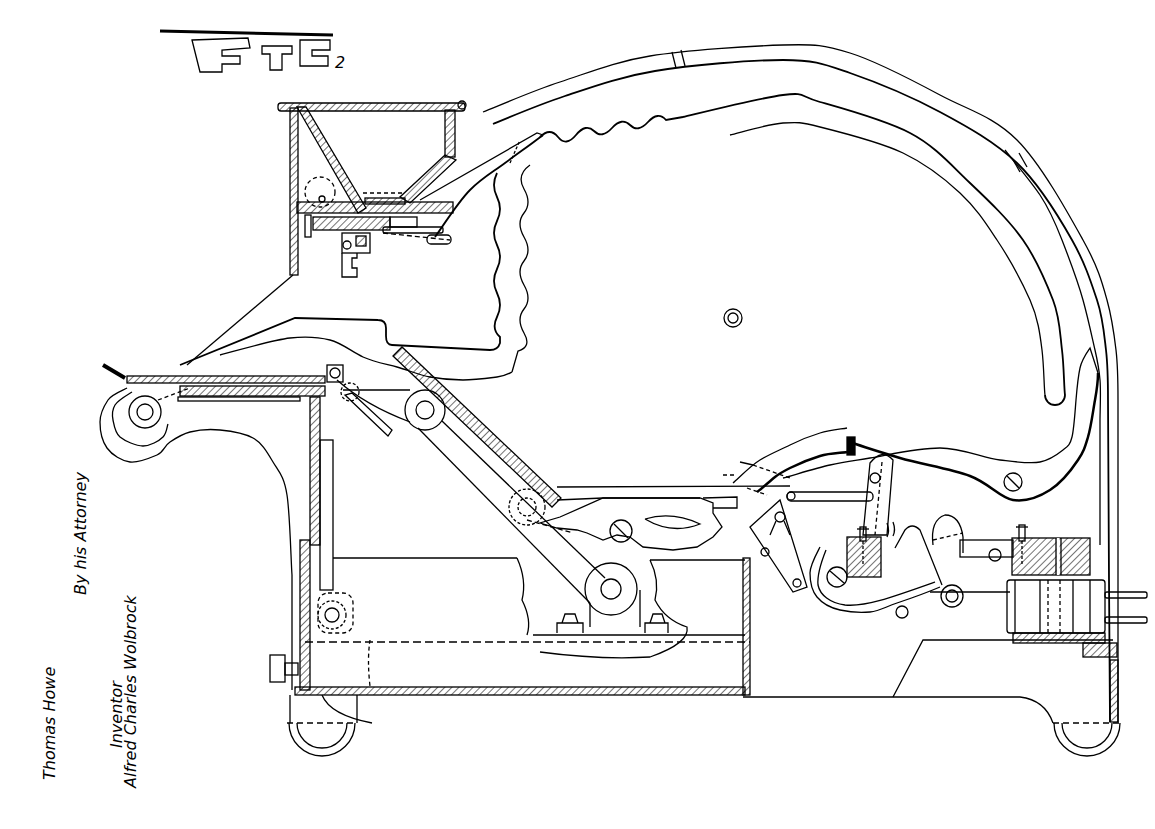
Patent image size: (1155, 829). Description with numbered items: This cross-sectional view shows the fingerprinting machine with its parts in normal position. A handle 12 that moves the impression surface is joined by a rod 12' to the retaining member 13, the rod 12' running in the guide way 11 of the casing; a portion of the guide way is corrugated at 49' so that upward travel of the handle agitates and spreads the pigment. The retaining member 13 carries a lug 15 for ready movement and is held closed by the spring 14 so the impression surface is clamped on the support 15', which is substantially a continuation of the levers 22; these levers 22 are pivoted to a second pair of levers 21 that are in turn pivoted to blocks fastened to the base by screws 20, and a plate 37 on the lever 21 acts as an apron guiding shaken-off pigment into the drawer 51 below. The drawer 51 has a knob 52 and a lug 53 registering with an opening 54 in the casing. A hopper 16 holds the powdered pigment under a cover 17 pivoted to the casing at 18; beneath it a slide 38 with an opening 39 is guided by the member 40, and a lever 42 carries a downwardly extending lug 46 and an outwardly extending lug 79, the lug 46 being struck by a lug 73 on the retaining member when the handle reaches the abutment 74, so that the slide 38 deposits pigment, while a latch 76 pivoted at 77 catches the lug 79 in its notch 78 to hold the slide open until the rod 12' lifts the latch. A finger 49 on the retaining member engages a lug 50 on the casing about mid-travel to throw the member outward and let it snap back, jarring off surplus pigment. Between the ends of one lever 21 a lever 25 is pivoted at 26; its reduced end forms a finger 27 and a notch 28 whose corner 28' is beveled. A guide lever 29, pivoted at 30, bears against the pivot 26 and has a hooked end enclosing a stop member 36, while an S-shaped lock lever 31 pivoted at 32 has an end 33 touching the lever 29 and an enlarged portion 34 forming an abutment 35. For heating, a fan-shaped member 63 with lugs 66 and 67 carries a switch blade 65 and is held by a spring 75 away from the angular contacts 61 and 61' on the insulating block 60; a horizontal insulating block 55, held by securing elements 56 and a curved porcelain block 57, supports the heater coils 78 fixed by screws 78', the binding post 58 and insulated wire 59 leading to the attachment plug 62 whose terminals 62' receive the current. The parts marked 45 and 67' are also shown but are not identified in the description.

The guide way 11 is at (833, 120).
The handle 12 is at (196, 539).
The rod 12' is at (177, 412).
The retaining member 13 is at (247, 372).
The spring 14 is at (318, 368).
The lug 15 is at (192, 359).
The support 15' is at (87, 376).
The hopper 16 is at (340, 157).
The cover 17 is at (288, 104).
The pivot 18 is at (462, 100).
The screws 20 is at (562, 616).
The levers 21 is at (470, 478).
The levers 22 is at (404, 428).
The lever 25 is at (605, 485).
The pivot 26 is at (518, 510).
The finger 27 is at (815, 492).
The notch 28 is at (807, 508).
The corner 28' is at (807, 524).
The guide lever 29 is at (700, 545).
The pivot 30 is at (622, 519).
The lock lever 31 is at (880, 428).
The pivot 32 is at (1008, 472).
The end of lock lever 33 is at (725, 518).
The enlarged portion 34 is at (790, 450).
The abutment 35 is at (868, 415).
The stop member 36 is at (680, 522).
The plate 37 is at (505, 440).
The slide 38 is at (430, 238).
The opening 39 is at (383, 207).
The guide member 40 is at (322, 232).
The lever 42 is at (300, 225).
The plate 45 is at (298, 243).
The lug 46 is at (345, 280).
The finger 49 is at (366, 419).
The corrugated portion 49' is at (611, 119).
The lug 50 is at (727, 308).
The drawer 51 is at (752, 665).
The knob 52 is at (268, 662).
The lug 53 is at (318, 663).
The opening 54 is at (365, 728).
The insulating block 55 is at (1090, 553).
The securing elements 56 is at (1075, 530).
The curved porcelain block 57 is at (1020, 600).
The binding post 58 is at (851, 562).
The insulated wire 59 is at (940, 592).
The insulating block 60 is at (975, 627).
The electric contact 61 is at (973, 526).
The electric contact 61' is at (918, 546).
The attachment plug 62 is at (1124, 640).
The terminals 62' is at (1129, 579).
The fan-shaped member 63 is at (756, 465).
The electric switch blade 65 is at (893, 490).
The lug 66 is at (846, 516).
The lug 67 is at (774, 525).
The pin 67' is at (733, 480).
The lug 73 is at (173, 362).
The abutment 74 is at (393, 332).
The spring 75 is at (848, 618).
The latch 76 is at (482, 178).
The pivot 77 is at (305, 192).
The notch 78 is at (717, 400).
The screws 78' is at (1040, 533).
The lug 79 is at (372, 252).